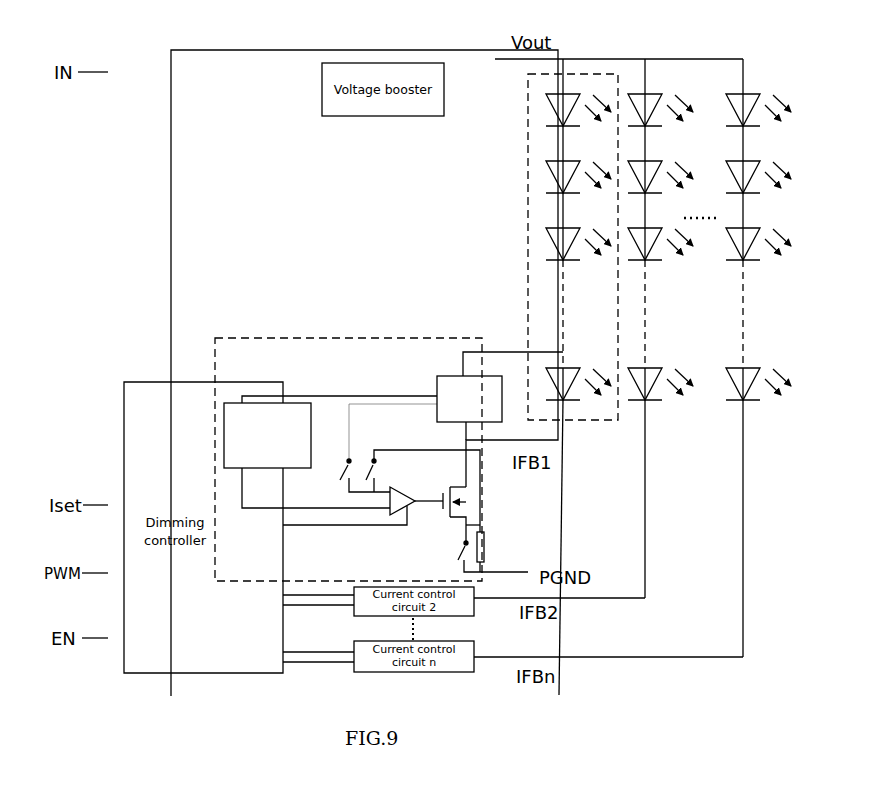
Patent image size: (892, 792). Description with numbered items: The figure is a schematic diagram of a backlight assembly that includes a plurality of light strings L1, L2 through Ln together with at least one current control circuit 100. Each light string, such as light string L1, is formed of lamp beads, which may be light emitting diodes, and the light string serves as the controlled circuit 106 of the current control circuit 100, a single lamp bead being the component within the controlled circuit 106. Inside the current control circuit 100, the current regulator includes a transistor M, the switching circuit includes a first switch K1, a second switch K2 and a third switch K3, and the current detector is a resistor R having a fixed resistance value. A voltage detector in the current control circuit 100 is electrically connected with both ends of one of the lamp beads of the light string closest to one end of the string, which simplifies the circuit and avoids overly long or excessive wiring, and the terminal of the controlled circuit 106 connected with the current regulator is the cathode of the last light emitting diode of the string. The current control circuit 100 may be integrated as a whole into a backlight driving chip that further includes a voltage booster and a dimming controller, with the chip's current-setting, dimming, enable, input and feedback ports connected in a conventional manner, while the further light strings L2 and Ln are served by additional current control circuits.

The current control circuit 100 is at (268, 337).
The controlled circuit 106 is at (586, 73).
The first switch K1 is at (477, 556).
The second switch K2 is at (423, 491).
The third switch K3 is at (355, 473).
The resistor R is at (493, 552).
The transistor M is at (461, 515).
The light string L1 is at (578, 377).
The light string L2 is at (660, 328).
The light string Ln is at (758, 358).